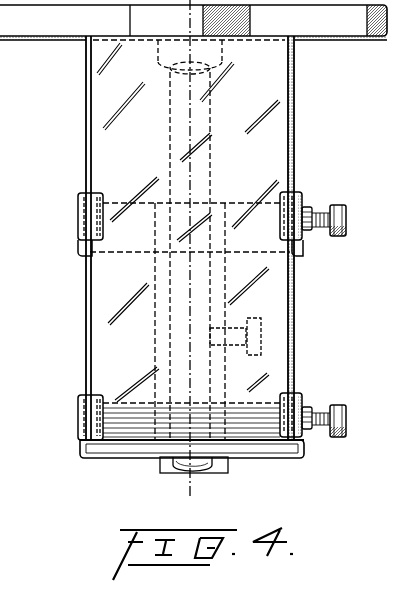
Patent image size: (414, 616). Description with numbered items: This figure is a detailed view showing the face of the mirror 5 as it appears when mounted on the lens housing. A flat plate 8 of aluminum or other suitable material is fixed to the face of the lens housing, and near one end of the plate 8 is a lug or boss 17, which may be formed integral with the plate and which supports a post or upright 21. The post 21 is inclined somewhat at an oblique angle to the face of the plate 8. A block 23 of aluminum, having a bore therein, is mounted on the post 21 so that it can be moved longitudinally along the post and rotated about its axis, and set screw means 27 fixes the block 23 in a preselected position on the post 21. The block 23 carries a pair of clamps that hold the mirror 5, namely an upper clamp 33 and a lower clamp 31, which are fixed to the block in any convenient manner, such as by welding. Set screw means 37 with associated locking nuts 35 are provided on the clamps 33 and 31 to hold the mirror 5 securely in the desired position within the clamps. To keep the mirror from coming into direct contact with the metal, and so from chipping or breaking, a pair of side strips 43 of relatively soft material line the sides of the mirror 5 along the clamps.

The mirror 5 is at (272, 100).
The flat plate 8 is at (348, 27).
The lug or boss 17 is at (165, 57).
The post or upright 21 is at (160, 462).
The block 23 is at (230, 463).
The set screw means 27 is at (262, 335).
The lower clamp 31 is at (303, 398).
The upper clamp 33 is at (300, 195).
The locking nut 35 is at (308, 230).
The set screw means 37 is at (346, 210).
The side strips 43 is at (86, 158).